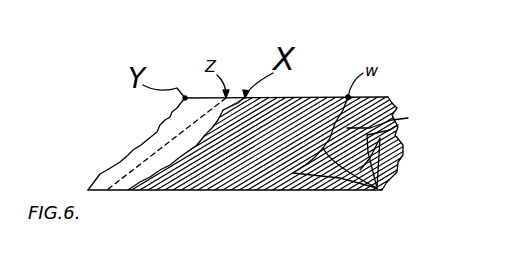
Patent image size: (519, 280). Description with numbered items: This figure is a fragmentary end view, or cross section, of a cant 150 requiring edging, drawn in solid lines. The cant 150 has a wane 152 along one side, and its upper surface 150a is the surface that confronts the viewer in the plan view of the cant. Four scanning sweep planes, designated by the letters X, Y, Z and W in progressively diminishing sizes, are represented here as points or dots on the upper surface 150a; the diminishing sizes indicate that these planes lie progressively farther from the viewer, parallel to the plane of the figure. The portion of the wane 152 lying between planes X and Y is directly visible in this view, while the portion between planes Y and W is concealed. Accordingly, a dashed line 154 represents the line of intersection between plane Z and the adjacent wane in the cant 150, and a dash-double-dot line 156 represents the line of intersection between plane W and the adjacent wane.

The cant 150 is at (303, 97).
The upper surface 150a is at (372, 97).
The wane 152 is at (158, 133).
The dashed line 154 is at (127, 157).
The dash-double-dot line 156 is at (408, 118).